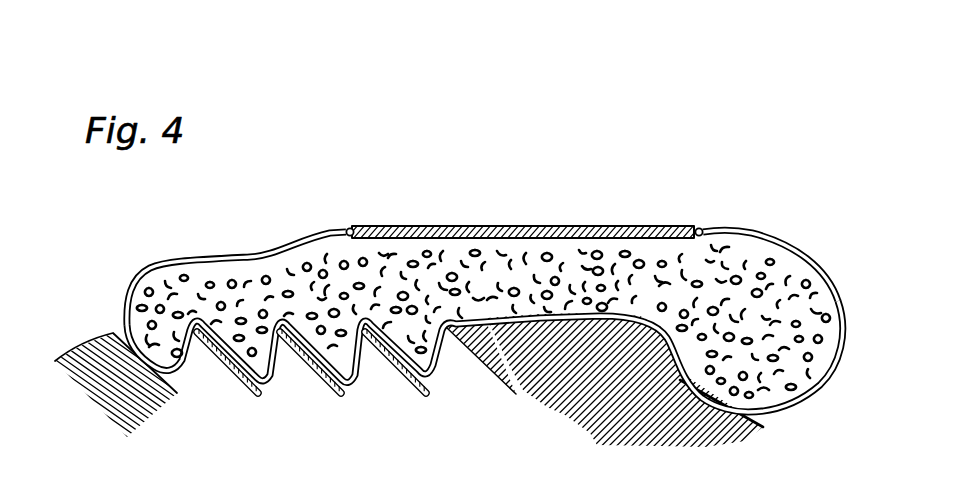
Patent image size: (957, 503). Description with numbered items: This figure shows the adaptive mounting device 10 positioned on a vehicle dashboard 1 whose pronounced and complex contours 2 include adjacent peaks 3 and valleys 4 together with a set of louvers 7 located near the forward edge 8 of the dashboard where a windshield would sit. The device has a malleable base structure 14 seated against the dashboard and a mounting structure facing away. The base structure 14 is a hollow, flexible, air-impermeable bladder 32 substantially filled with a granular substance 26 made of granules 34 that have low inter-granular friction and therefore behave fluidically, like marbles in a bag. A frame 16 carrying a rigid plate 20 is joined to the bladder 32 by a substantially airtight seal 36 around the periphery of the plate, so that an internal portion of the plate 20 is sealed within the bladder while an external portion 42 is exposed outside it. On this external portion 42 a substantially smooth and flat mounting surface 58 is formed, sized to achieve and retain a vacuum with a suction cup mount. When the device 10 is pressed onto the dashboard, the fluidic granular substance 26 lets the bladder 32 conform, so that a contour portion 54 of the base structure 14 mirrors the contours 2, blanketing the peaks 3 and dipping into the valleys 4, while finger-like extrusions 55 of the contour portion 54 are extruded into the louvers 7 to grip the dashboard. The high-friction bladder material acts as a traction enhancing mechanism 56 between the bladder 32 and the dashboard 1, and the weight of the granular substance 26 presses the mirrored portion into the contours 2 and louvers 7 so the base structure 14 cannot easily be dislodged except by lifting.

The vehicle dashboard 1 is at (653, 417).
The contours 2 is at (545, 318).
The peaks 3 is at (637, 327).
The valleys 4 is at (690, 397).
The louvers 7 is at (502, 412).
The forward edge 8 is at (96, 334).
The adaptive mounting device 10 is at (485, 291).
The malleable base structure 14 is at (803, 394).
The frame 16 is at (642, 224).
The plate 20 is at (652, 222).
The granular substance 26 is at (230, 277).
The bladder 32 is at (258, 233).
The granules 34 is at (762, 256).
The seal 36 is at (347, 228).
The external portion 42 is at (493, 224).
The contour portion 54 is at (477, 317).
The extrusions 55 is at (183, 366).
The traction enhancing mechanism 56 is at (486, 318).
The mounting surface 58 is at (576, 224).